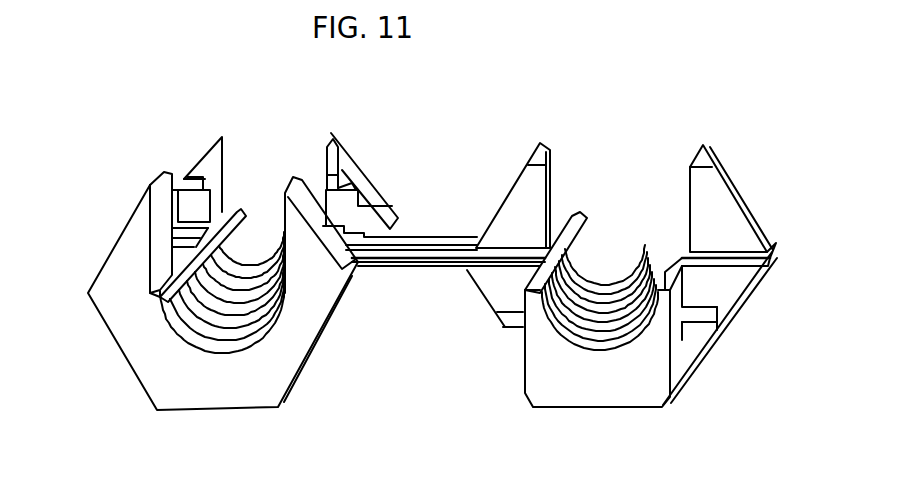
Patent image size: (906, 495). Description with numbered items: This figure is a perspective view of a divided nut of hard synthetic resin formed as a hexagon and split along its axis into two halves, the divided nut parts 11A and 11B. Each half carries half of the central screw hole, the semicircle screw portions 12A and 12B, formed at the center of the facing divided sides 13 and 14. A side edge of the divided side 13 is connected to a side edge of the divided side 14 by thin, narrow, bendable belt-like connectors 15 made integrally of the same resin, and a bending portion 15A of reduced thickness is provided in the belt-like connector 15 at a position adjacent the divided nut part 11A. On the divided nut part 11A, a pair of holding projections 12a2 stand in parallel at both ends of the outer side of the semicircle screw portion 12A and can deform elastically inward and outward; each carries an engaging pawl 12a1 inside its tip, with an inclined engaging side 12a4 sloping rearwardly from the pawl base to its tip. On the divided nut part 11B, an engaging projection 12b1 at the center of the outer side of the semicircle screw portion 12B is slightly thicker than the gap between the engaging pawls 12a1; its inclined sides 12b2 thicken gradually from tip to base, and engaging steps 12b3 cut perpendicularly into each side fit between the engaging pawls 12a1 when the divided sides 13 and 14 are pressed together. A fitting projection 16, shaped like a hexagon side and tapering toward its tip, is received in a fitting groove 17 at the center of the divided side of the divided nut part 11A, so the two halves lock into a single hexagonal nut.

The divided nut part 11A is at (222, 302).
The divided nut part 11B is at (651, 334).
The semicircle screw portion 12A is at (222, 349).
The semicircle screw portion 12B is at (600, 351).
The engaging pawl 12a1 is at (254, 166).
The holding projection 12a2 is at (250, 190).
The inclined engaging side 12a4 is at (400, 185).
The engaging projection 12b1 is at (599, 348).
The inclined side 12b2 is at (747, 297).
The engaging step 12b3 is at (737, 348).
The divided side 13 is at (101, 241).
The divided side 14 is at (745, 259).
The belt-like connector 15 is at (445, 282).
The bending portion 15A is at (448, 291).
The fitting projection 16 is at (626, 187).
The fitting groove 17 is at (210, 212).